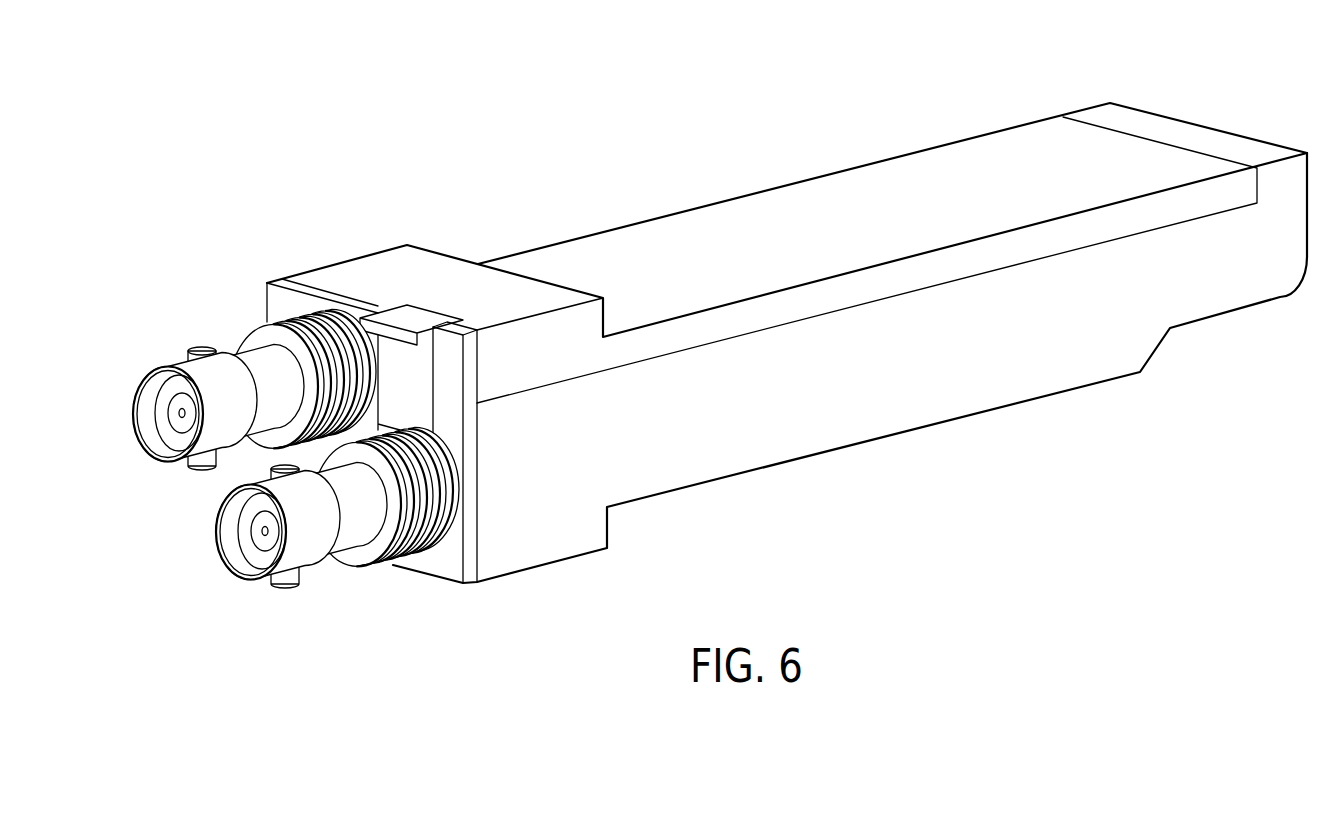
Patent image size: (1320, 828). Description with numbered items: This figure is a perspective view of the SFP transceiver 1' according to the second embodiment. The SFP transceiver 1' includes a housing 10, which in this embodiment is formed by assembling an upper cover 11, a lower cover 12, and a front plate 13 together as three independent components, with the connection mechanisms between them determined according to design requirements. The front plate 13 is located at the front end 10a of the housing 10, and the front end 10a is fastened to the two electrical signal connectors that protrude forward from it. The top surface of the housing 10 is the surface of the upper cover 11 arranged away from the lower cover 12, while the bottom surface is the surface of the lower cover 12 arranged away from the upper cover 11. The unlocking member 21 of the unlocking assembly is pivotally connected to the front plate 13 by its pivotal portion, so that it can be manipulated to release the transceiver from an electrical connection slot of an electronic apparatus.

The SFP transceiver 1' is at (720, 354).
The housing 10 is at (732, 377).
The front end 10a is at (256, 271).
The upper cover 11 is at (432, 264).
The lower cover 12 is at (570, 535).
The front plate 13 is at (447, 560).
The unlocking member 21 is at (402, 318).